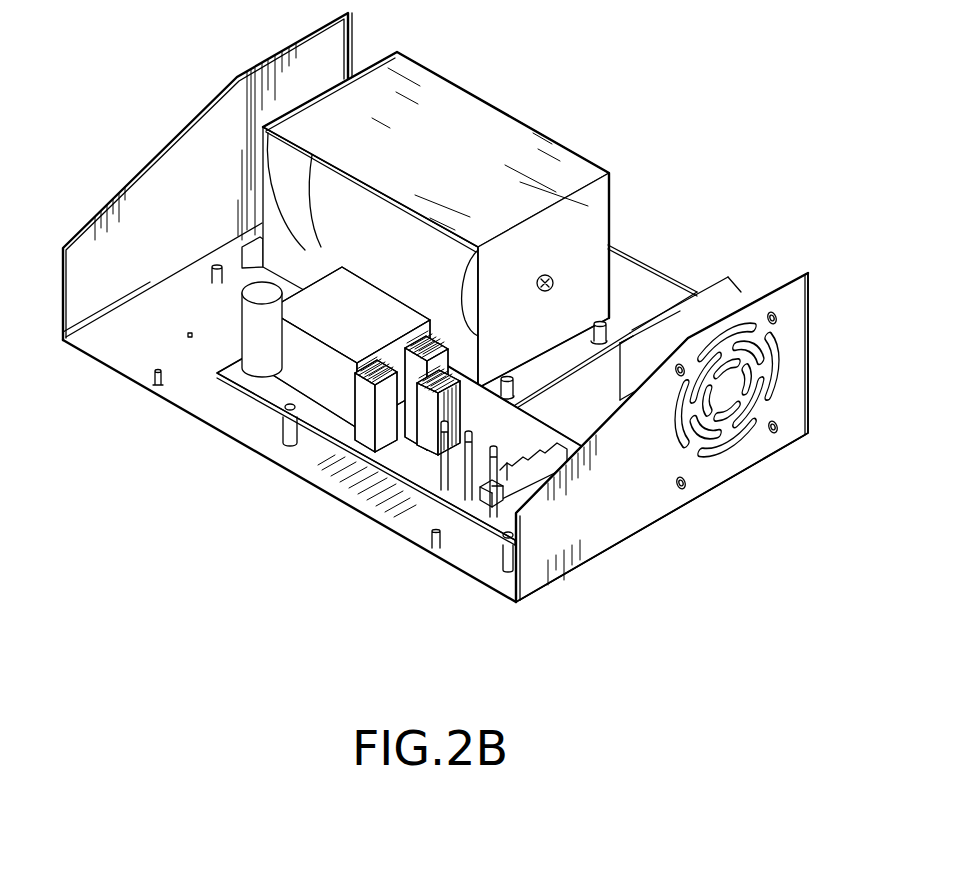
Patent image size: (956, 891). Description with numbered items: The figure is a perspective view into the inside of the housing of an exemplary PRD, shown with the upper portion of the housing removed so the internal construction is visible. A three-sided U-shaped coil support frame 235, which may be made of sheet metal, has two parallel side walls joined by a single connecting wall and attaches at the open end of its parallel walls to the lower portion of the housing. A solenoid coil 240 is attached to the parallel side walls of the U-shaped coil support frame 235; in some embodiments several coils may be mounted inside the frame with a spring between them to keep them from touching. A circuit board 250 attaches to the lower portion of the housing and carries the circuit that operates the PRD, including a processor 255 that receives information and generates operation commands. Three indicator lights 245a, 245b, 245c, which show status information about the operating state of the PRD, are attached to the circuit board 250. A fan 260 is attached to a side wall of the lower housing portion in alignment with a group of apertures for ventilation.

The U-shaped coil support frame 235 is at (485, 117).
The solenoid coil 240 is at (350, 220).
The indicator light 245a is at (440, 466).
The indicator light 245b is at (467, 505).
The indicator light 245c is at (493, 490).
The circuit board 250 is at (317, 430).
The processor 255 is at (285, 368).
The fan 260 is at (737, 290).